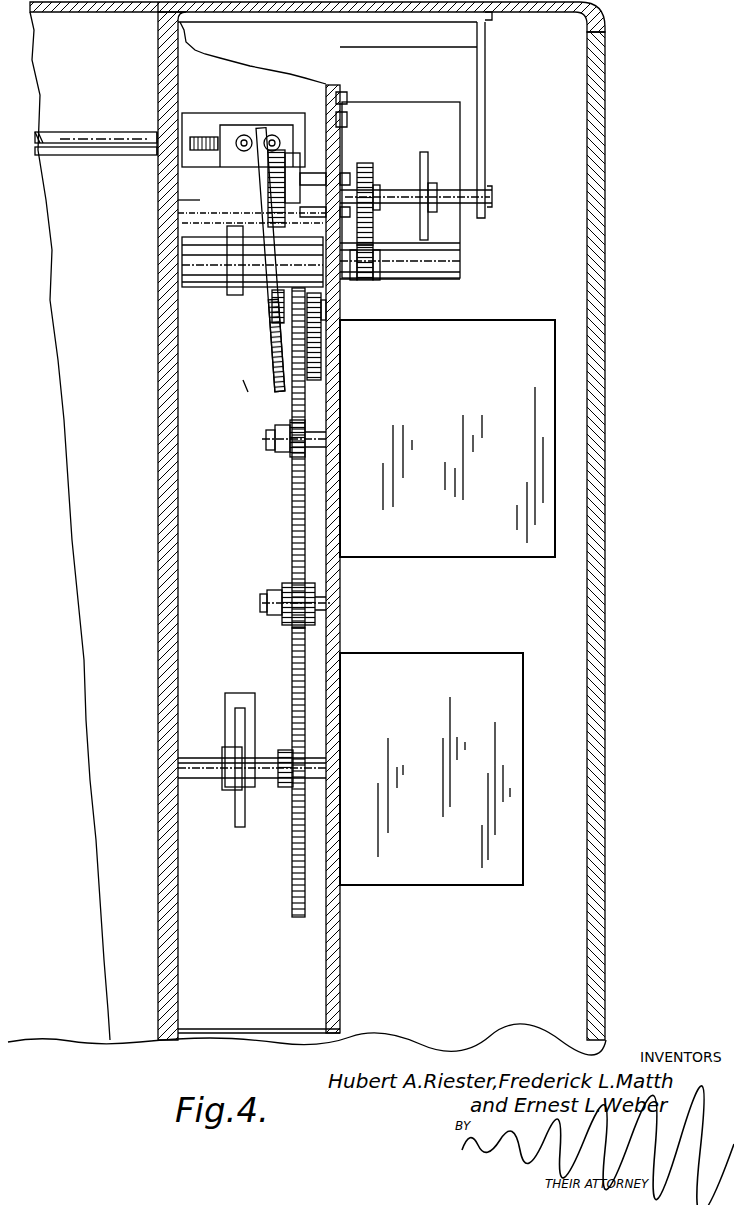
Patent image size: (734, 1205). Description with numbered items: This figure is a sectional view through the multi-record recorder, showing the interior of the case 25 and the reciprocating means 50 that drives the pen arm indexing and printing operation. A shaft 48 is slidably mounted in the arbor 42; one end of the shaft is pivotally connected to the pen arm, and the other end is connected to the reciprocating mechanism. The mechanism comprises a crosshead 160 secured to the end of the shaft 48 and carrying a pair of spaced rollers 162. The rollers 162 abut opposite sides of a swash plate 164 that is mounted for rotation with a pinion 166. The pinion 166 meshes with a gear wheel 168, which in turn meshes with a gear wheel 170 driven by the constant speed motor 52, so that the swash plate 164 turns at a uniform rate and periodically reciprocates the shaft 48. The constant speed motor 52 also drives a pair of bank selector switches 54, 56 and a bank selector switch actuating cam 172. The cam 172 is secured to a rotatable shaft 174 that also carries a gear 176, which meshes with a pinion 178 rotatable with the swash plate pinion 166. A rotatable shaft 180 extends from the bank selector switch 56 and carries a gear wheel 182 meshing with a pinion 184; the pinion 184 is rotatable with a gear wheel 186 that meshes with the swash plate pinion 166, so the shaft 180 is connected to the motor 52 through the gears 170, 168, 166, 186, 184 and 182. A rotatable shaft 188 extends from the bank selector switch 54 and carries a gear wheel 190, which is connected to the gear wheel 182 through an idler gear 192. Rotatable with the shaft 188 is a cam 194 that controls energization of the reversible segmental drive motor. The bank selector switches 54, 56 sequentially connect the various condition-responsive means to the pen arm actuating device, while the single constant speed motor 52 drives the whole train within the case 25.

The case 25 is at (605, 545).
The arbor 42 is at (58, 134).
The shaft 48 is at (160, 140).
The reciprocating means 50 is at (189, 206).
The constant speed motor 52 is at (424, 105).
The bank selector switch 54 is at (469, 662).
The bank selector switch 56 is at (481, 334).
The crosshead 160 is at (190, 122).
The rollers 162 is at (276, 134).
The swash plate 164 is at (258, 186).
The pinion 166 is at (212, 283).
The gear wheel 168 is at (279, 323).
The gear wheel 170 is at (272, 208).
The bank selector switch actuating cam 172 is at (424, 165).
The rotatable shaft 174 is at (468, 192).
The gear 176 is at (365, 163).
The pinion 178 is at (362, 282).
The rotatable shaft 180 is at (310, 432).
The gear wheel 182 is at (292, 492).
The pinion 184 is at (266, 378).
The gear wheel 186 is at (321, 350).
The rotatable shaft 188 is at (268, 768).
The gear wheel 190 is at (292, 662).
The idler gear 192 is at (286, 583).
The cam 194 is at (236, 812).